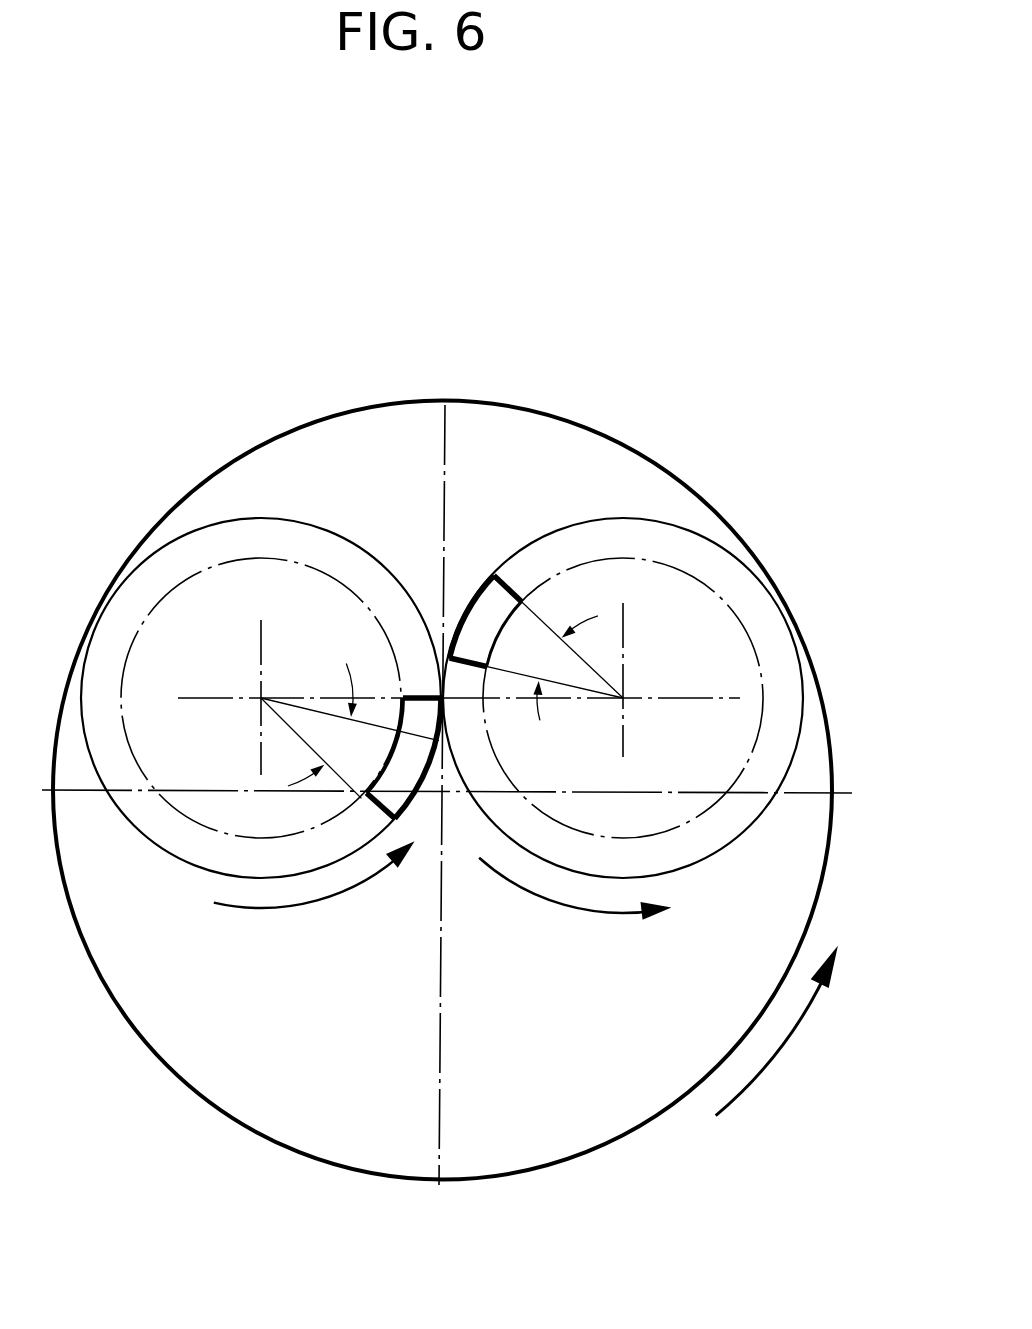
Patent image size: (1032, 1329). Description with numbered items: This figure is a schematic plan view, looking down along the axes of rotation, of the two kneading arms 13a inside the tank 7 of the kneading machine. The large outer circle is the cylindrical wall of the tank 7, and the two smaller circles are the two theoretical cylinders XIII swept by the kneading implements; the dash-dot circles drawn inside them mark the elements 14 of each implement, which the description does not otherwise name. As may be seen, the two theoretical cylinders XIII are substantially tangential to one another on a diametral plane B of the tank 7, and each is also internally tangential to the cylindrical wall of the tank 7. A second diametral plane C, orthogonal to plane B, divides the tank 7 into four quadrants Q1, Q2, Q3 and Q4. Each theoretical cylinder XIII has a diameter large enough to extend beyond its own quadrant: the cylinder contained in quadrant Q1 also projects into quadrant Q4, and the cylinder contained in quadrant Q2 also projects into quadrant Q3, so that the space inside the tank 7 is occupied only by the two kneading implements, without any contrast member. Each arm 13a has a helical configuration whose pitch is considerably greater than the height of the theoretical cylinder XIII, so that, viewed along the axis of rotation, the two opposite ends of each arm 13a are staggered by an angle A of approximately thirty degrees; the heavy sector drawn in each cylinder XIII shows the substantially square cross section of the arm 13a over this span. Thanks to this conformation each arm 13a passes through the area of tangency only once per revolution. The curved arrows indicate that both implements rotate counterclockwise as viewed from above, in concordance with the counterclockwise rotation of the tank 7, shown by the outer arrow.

The tank 7 is at (678, 461).
The arm 13a is at (471, 585).
The rotor 14 is at (258, 694).
The angle A is at (442, 687).
The diametral plane B is at (430, 1013).
The diametral plane C is at (803, 795).
The theoretical cylinder XIII is at (198, 525).
The quadrant Q1 is at (340, 438).
The quadrant Q2 is at (538, 442).
The quadrant Q3 is at (547, 1128).
The quadrant Q4 is at (328, 1130).